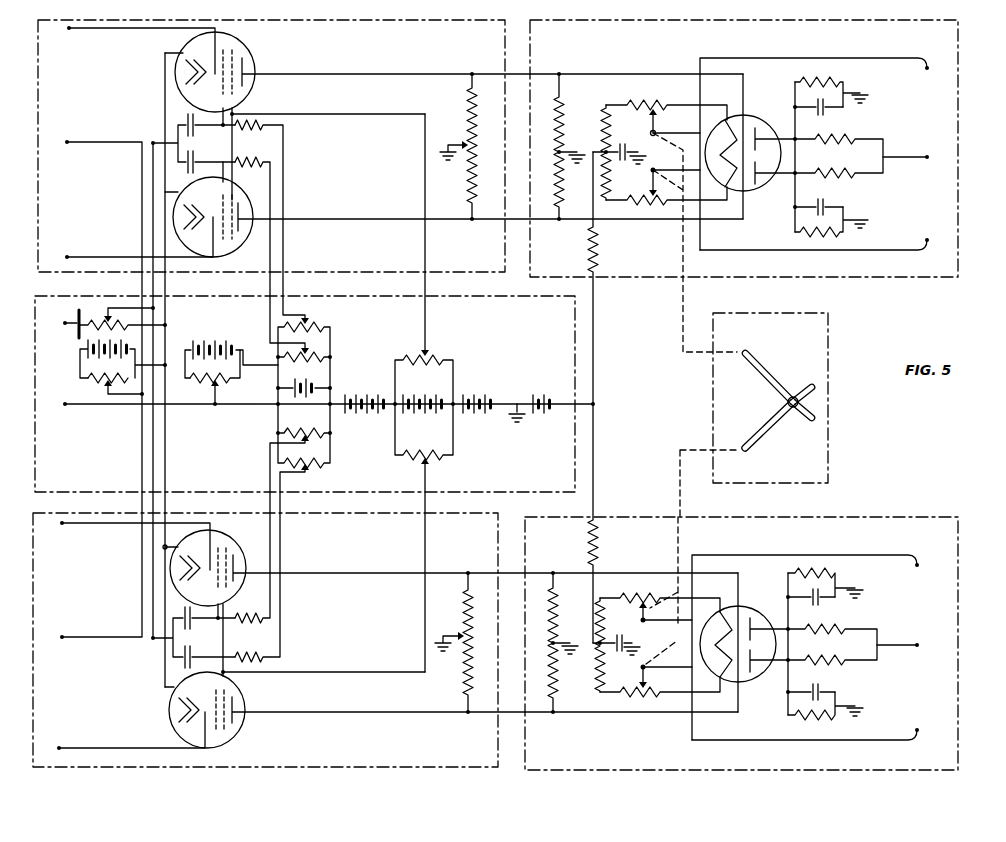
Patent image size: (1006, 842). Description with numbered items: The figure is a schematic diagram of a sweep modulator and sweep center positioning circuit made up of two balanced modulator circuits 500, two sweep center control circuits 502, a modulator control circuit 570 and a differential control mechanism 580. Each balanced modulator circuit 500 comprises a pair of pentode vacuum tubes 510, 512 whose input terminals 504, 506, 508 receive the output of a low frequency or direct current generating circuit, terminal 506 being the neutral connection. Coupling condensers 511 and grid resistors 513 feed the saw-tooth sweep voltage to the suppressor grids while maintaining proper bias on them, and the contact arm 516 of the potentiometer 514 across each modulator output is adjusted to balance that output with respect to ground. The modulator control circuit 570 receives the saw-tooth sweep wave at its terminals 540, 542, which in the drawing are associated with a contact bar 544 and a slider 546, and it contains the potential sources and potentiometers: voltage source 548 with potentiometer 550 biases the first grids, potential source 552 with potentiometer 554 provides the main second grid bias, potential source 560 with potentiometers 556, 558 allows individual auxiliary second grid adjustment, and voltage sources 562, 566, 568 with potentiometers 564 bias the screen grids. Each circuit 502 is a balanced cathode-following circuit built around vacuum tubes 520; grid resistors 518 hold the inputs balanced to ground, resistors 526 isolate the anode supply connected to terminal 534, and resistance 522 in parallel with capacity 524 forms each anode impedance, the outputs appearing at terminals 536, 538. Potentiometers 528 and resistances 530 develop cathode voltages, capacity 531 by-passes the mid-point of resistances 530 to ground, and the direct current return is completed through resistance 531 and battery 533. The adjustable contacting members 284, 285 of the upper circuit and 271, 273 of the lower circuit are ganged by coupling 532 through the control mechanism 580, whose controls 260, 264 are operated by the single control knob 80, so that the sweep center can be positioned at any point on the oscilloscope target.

The balanced modulator circuit 500 is at (360, 22).
The sweep center control circuit 502 is at (712, 22).
The input terminal 504 is at (69, 30).
The input terminal 506 is at (67, 144).
The input terminal 508 is at (69, 255).
The pentode vacuum tube 510 is at (245, 47).
The coupling condenser 511 is at (195, 143).
The pentode vacuum tube 512 is at (238, 250).
The grid resistor 513 is at (238, 140).
The potentiometer 514 is at (466, 108).
The contact arm 516 is at (456, 141).
The grid resistor 518 is at (566, 100).
The vacuum tube 520 is at (752, 192).
The resistance 522 is at (828, 74).
The capacity 524 is at (822, 117).
The resistor 526 is at (836, 150).
The potentiometer 528 is at (658, 96).
The resistance 530 is at (598, 158).
The capacity and resistance 531 is at (628, 148).
The ganging coupling 532 is at (683, 270).
The battery 533 is at (540, 416).
The terminal 534 is at (925, 152).
The output terminal 536 is at (918, 52).
The output terminal 538 is at (918, 244).
The terminal 540 is at (56, 309).
The terminal 542 is at (66, 406).
The contact bar 544 is at (80, 308).
The slider 546 is at (110, 306).
The voltage source 548 is at (86, 350).
The potentiometer 550 is at (94, 392).
The potential source 552 is at (200, 334).
The potentiometer 554 is at (228, 384).
The potentiometer 556 is at (318, 318).
The potentiometer 558 is at (318, 354).
The potential source 560 is at (318, 384).
The voltage source 562 is at (358, 416).
The potentiometer 564 is at (440, 352).
The voltage source 566 is at (418, 416).
The voltage source 568 is at (478, 416).
The modulator control circuit 570 is at (370, 296).
The differential control mechanism 580 is at (828, 318).
The control knob 80 is at (801, 386).
The control 264 is at (768, 370).
The control 260 is at (768, 432).
The adjustable contacting member 284 is at (659, 181).
The adjustable contacting member 285 is at (659, 125).
The adjustable contacting member 271 is at (636, 624).
The adjustable contacting member 273 is at (650, 673).